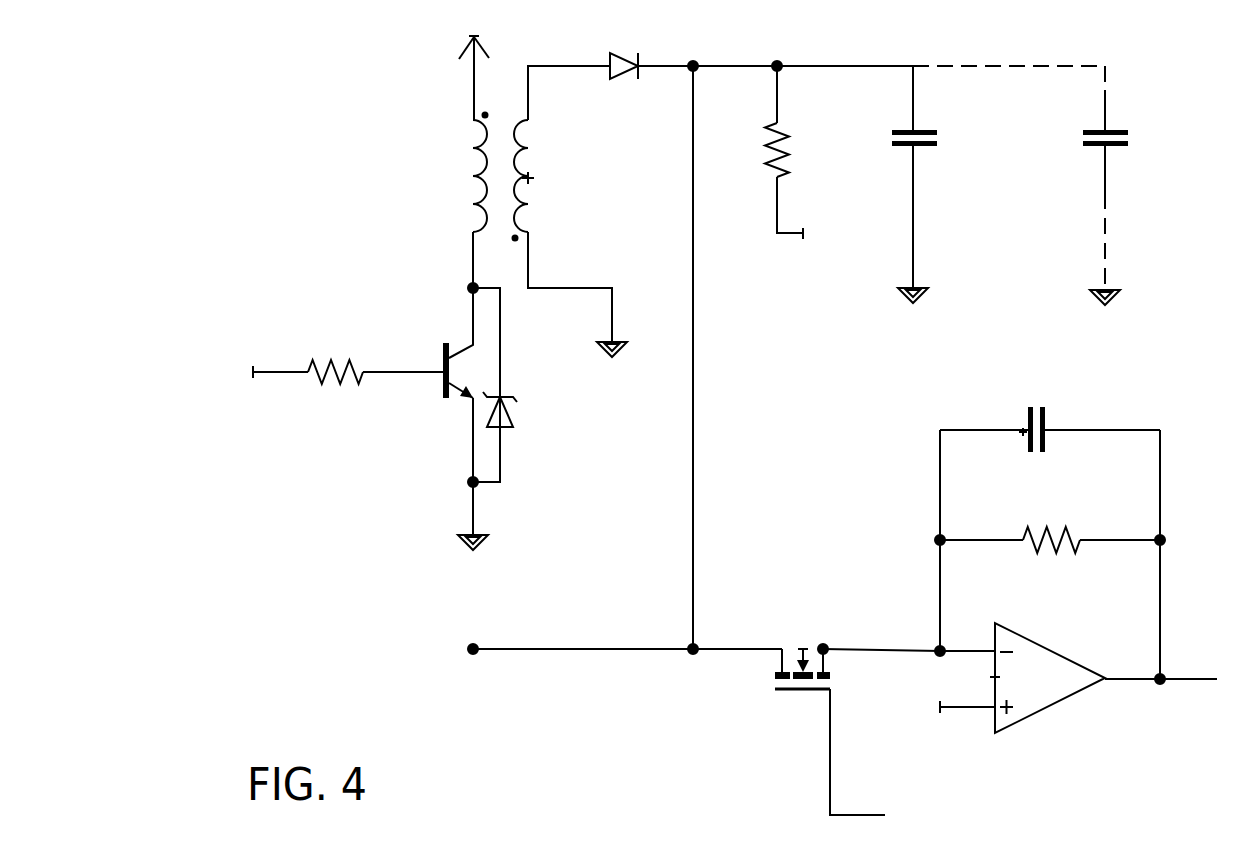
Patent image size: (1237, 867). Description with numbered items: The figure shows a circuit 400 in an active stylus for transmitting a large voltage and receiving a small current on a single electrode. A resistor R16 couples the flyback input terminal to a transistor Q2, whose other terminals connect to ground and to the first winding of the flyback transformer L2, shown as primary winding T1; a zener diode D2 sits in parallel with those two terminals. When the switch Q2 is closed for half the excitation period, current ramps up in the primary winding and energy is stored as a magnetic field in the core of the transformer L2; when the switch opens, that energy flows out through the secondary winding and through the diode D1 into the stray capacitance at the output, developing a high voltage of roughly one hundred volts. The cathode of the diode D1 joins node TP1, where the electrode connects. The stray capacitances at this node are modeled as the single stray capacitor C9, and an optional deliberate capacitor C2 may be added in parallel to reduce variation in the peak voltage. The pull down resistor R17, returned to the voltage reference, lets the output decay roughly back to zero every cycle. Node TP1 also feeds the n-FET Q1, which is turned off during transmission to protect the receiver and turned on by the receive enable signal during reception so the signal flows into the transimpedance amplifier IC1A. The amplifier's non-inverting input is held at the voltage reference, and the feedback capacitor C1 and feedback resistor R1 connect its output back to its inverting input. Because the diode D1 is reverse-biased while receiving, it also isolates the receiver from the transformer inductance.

The circuit 400 is at (258, 157).
The transformer primary winding T1 is at (474, 162).
The transformer L2 is at (563, 204).
The diode D1 is at (651, 51).
The transistor Q2 is at (432, 385).
The zener diode D2 is at (505, 385).
The resistor R16 is at (348, 357).
The pull down resistor R17 is at (769, 152).
The stray capacitor C9 is at (958, 177).
The capacitor C2 is at (1065, 178).
The node TP1 is at (599, 645).
The transistor Q1 is at (842, 708).
The amplifier IC1A is at (1076, 685).
The feedback capacitor C1 is at (1050, 416).
The feedback resistor R1 is at (1050, 541).